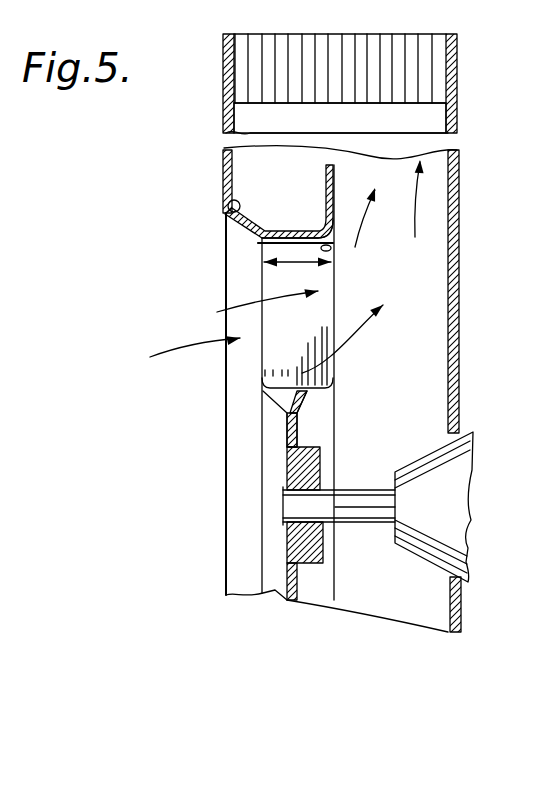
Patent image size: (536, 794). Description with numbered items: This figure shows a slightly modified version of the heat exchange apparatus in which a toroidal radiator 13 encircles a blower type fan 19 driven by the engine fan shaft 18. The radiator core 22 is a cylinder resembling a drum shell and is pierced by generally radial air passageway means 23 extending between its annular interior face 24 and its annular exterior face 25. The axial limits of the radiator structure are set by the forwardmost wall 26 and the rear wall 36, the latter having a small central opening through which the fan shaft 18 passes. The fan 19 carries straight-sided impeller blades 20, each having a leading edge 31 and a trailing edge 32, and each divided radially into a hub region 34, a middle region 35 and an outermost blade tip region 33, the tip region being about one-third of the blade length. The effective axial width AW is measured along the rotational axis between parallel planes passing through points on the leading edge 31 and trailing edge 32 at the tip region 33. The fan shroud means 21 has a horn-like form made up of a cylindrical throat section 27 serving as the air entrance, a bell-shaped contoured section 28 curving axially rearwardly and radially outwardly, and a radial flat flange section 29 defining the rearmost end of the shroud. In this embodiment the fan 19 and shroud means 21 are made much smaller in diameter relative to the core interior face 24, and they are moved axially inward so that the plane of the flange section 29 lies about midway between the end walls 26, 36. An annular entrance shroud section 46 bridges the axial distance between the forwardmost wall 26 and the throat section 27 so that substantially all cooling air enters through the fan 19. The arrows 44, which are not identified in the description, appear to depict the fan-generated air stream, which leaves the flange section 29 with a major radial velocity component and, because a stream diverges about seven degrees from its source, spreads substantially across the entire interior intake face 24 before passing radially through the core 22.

The radiator 13 is at (460, 127).
The fan shaft 18 is at (360, 500).
The fan 19 is at (283, 487).
The impeller blades 20 is at (300, 338).
The fan shroud means 21 is at (257, 243).
The radiator core 22 is at (393, 52).
The air passageway means 23 is at (323, 50).
The annular interior face 24 is at (367, 103).
The annular exterior face 25 is at (240, 33).
The forwardmost wall 26 is at (223, 148).
The cylindrical throat section 27 is at (268, 222).
The contoured section 28 is at (312, 222).
The radial flat flange section 29 is at (336, 176).
The leading edge 31 is at (262, 372).
The trailing edge 32 is at (335, 370).
The outermost blade tip region 33 is at (337, 250).
The hub region 34 is at (330, 388).
The middle region 35 is at (320, 304).
The rear wall 36 is at (460, 220).
The upward flow arrows 44 is at (389, 203).
The annular entrance shroud section 46 is at (223, 197).
The effective axial width AW is at (289, 265).